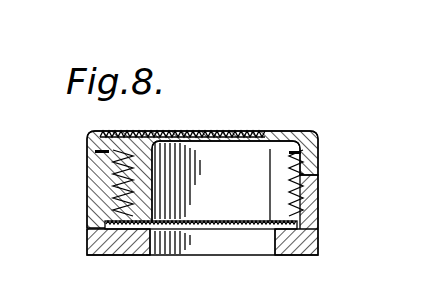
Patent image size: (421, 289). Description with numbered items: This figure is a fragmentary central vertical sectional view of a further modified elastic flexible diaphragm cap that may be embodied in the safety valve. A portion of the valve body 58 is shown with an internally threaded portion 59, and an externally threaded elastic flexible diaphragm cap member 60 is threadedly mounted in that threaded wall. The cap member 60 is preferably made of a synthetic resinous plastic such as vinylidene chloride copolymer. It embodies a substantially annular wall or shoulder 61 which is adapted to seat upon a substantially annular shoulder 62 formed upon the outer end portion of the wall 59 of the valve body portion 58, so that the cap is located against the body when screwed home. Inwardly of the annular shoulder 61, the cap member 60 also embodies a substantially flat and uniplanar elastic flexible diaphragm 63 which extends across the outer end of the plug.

The valve body portion 58 is at (318, 238).
The internally threaded portion 59 is at (318, 196).
The elastic flexible diaphragm cap member 60 is at (318, 213).
The annular wall or shoulder 61 is at (310, 140).
The annular shoulder 62 is at (318, 172).
The elastic flexible diaphragm 63 is at (250, 132).